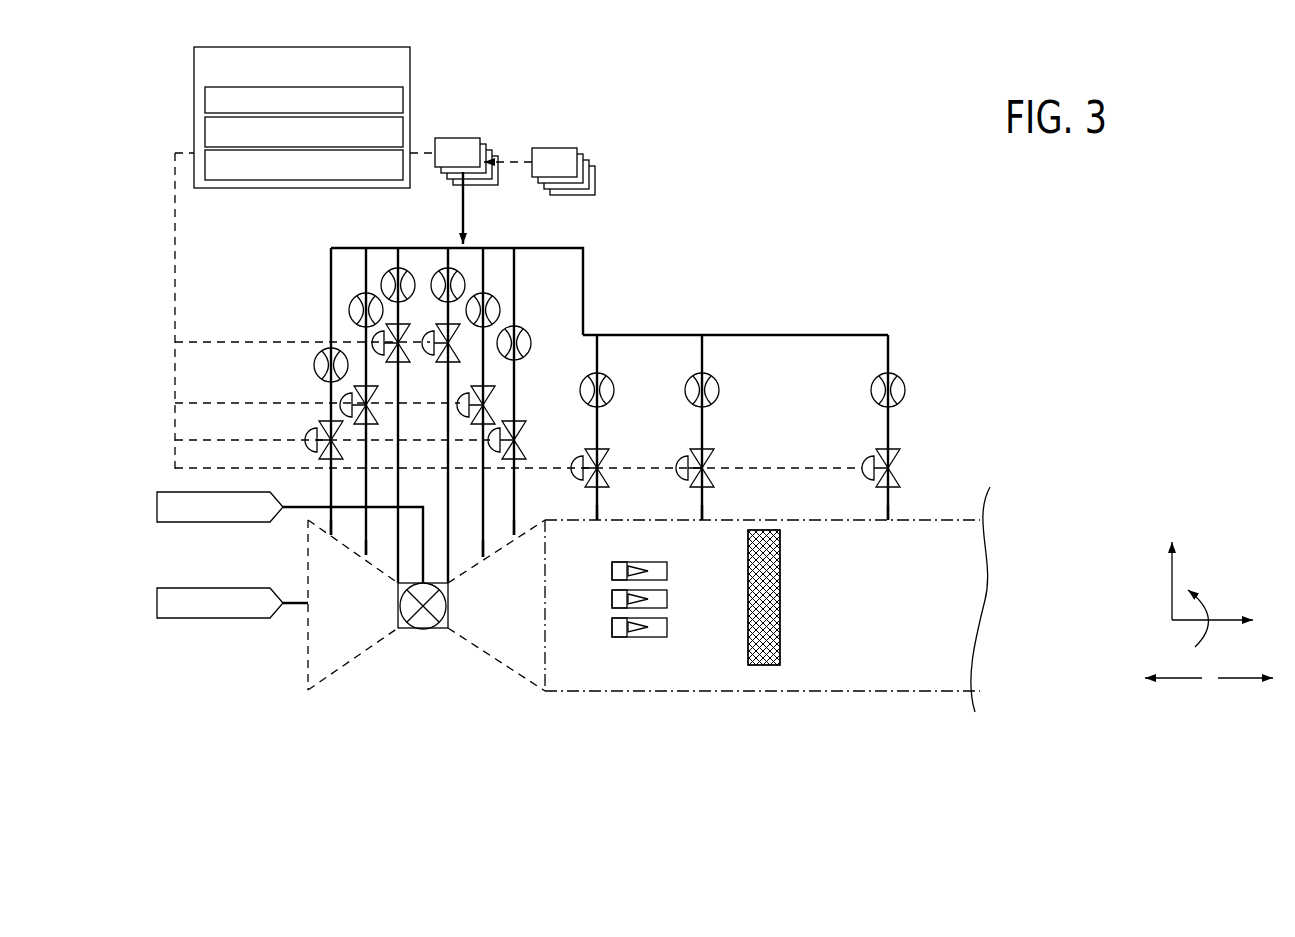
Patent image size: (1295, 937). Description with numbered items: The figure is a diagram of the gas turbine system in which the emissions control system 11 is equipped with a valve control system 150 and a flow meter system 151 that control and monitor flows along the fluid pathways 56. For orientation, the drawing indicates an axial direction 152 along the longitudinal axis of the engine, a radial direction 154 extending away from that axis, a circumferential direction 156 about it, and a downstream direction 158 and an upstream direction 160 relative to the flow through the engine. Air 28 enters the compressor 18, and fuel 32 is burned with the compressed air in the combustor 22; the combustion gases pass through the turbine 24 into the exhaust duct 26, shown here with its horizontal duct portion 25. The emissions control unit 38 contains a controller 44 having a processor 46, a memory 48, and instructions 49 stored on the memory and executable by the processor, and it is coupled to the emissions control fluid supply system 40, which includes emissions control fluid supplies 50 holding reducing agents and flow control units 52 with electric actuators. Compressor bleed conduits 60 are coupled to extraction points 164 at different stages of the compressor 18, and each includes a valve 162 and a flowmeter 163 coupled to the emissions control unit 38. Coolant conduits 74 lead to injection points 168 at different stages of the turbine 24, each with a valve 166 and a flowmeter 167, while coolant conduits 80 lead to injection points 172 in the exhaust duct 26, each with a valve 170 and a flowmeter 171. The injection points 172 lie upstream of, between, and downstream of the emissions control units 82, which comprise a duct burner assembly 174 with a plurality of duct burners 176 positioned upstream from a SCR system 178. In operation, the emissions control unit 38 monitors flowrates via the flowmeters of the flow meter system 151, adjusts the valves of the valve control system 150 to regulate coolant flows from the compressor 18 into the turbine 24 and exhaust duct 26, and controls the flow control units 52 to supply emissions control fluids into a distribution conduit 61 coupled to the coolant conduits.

The emissions control system 11 is at (537, 42).
The compressor 18 is at (305, 680).
The combustor 22 is at (423, 633).
The turbine 24 is at (497, 665).
The horizontal duct portion 25 is at (927, 692).
The exhaust duct 26 is at (849, 692).
The air 28 is at (157, 596).
The fuel 32 is at (157, 500).
The emissions control unit 38 is at (240, 47).
The emissions control fluid supply system 40 is at (612, 110).
The controller 44 is at (397, 78).
The processor 46 is at (397, 111).
The memory 48 is at (397, 143).
The instructions 49 is at (397, 176).
The emissions control fluid supplies 50 is at (553, 148).
The flow control units 52 is at (470, 138).
The fluid pathways 56 is at (517, 256).
The compressor bleed conduits 60 is at (328, 497).
The distribution conduit 61 is at (583, 250).
The coolant conduits 74 is at (521, 507).
The coolant conduits 80 is at (600, 505).
The emissions control units 82 is at (730, 668).
The valve control system 150 is at (877, 287).
The flow meter system 151 is at (300, 230).
The axial direction 152 is at (1185, 627).
The radial direction 154 is at (1170, 592).
The circumferential direction 156 is at (1210, 612).
The downstream direction 158 is at (1242, 684).
The upstream direction 160 is at (1178, 684).
The valve 162 is at (357, 330).
The flowmeter 163 is at (372, 275).
The extraction points 164 is at (395, 577).
The valve 166 is at (463, 350).
The flowmeter 167 is at (472, 280).
The injection points 168 is at (517, 538).
The valve 170 is at (620, 455).
The flowmeter 171 is at (620, 383).
The injection points 172 is at (858, 545).
The duct burner assembly 174 is at (641, 668).
The duct burners 176 is at (612, 627).
The SCR system 178 is at (762, 668).